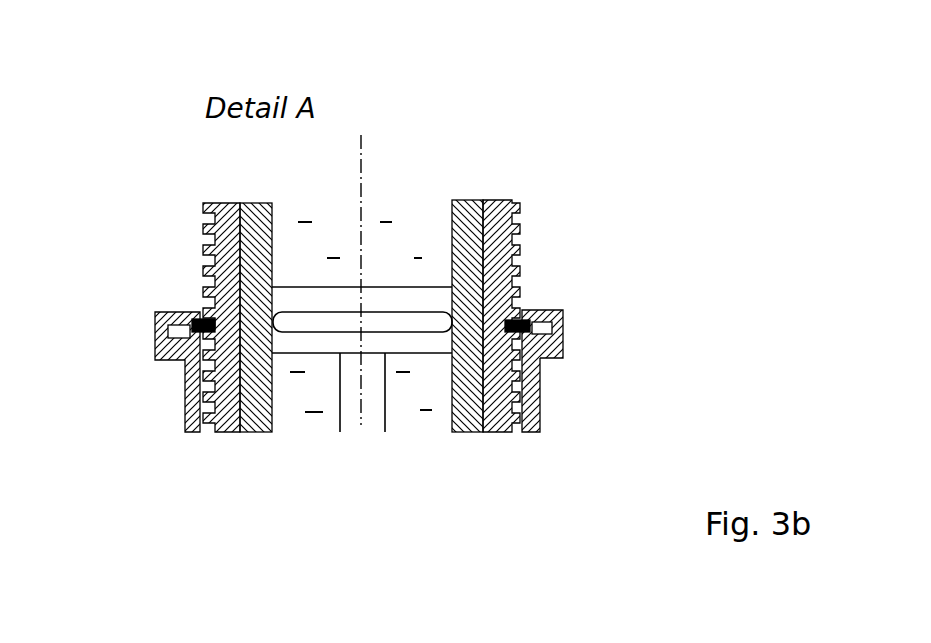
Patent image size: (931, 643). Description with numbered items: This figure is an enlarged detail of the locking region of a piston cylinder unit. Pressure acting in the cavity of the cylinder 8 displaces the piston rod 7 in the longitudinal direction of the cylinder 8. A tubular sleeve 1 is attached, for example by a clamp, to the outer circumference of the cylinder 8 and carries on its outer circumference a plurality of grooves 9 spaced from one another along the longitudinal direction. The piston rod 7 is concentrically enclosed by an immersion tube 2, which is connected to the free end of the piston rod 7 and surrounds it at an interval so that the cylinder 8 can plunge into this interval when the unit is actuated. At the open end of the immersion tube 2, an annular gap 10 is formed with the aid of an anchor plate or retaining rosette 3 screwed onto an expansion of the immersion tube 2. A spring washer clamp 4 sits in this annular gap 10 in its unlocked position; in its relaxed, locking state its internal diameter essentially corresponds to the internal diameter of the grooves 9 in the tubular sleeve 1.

The tubular sleeve 1 is at (518, 232).
The immersion tube 2 is at (545, 400).
The retaining rosette 3 is at (541, 311).
The spring washer clamp 4 is at (200, 318).
The piston rod 7 is at (338, 418).
The cylinder 8 is at (468, 210).
The grooves 9 is at (200, 228).
The annular gap 10 is at (602, 297).